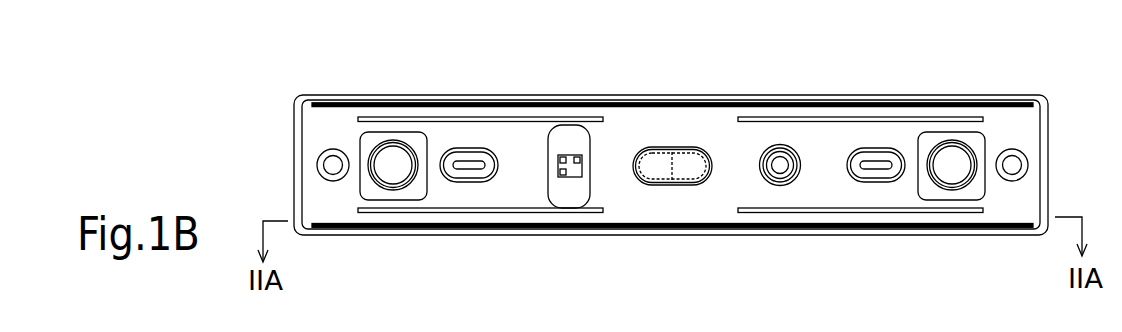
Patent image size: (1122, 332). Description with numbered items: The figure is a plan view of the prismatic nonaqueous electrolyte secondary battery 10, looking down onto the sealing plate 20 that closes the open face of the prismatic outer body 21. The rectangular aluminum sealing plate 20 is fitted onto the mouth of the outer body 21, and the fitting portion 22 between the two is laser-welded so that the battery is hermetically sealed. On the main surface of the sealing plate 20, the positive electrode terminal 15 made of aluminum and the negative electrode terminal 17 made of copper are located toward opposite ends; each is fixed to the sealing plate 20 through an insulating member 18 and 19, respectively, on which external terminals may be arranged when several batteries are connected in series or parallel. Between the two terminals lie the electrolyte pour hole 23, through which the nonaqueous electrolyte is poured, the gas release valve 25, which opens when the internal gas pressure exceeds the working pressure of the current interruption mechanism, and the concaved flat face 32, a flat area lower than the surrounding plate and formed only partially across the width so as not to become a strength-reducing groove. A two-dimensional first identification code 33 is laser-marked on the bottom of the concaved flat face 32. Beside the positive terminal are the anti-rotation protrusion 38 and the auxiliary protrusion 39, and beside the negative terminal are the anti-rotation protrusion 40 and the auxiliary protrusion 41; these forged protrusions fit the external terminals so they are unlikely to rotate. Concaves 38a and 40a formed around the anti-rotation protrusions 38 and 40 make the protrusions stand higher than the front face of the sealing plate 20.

The prismatic nonaqueous electrolyte secondary battery 10 is at (245, 77).
The positive electrode terminal 15 is at (955, 170).
The negative electrode terminal 17 is at (392, 170).
The insulating member 18 is at (972, 140).
The insulating member 19 is at (368, 137).
The sealing plate 20 is at (703, 121).
The prismatic outer body 21 is at (1042, 95).
The fitting portion 22 is at (1048, 134).
The electrolyte pour hole 23 is at (781, 170).
The gas release valve 25 is at (637, 147).
The concaved flat face 32 is at (574, 197).
The first identification code 33 is at (563, 156).
The anti-rotation protrusion 38 is at (879, 178).
The concave 38a is at (869, 160).
The auxiliary protrusion 39 is at (1015, 166).
The anti-rotation protrusion 40 is at (453, 150).
The concave 40a is at (457, 178).
The auxiliary protrusion 41 is at (330, 165).